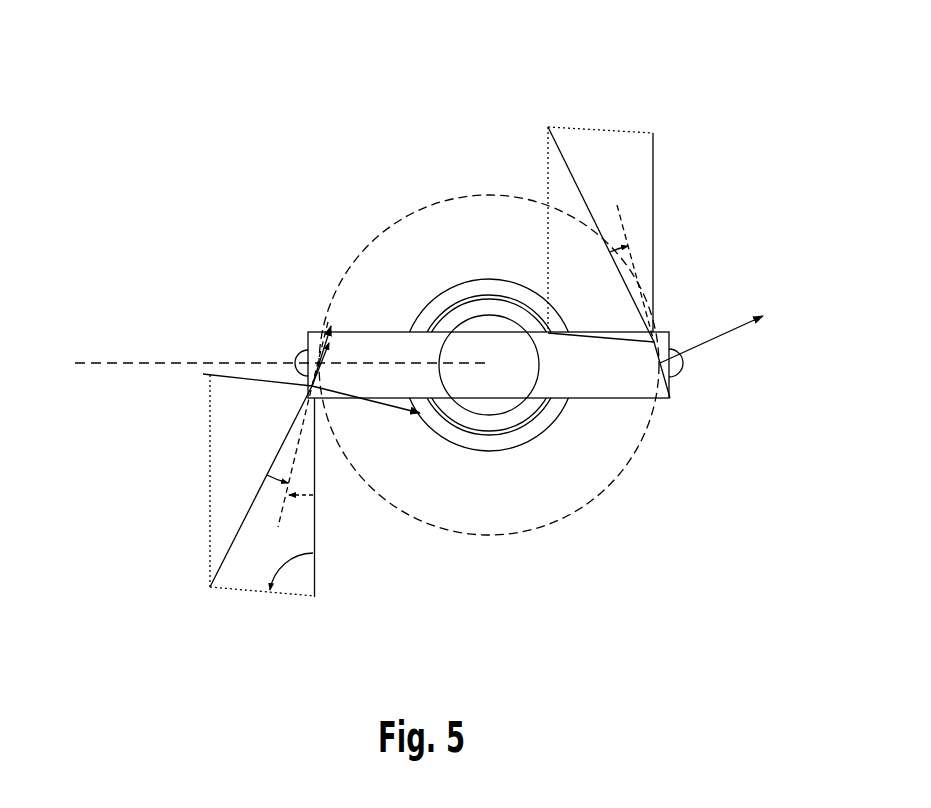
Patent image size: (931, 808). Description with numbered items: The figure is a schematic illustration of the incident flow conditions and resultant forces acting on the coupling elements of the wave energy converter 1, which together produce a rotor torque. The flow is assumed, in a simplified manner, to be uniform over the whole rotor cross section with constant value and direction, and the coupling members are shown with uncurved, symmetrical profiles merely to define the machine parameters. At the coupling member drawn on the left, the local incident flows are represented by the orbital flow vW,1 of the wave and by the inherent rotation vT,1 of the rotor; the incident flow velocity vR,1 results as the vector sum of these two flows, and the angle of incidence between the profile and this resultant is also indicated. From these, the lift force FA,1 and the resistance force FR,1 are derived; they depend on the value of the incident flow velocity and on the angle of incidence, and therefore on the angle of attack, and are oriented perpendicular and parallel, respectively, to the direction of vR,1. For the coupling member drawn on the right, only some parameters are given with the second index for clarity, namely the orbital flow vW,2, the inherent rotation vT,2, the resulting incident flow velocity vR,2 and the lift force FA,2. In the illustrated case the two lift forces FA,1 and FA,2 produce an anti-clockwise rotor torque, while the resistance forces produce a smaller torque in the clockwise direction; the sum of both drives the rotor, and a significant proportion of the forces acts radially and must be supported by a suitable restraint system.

The wave energy converter 1 is at (308, 110).
The resistance force FR,1 is at (313, 323).
The lift force FA,1 is at (345, 390).
The lift force FA,2 is at (712, 340).
The incident flow velocity vR,1 is at (245, 518).
The incident flow velocity vR,2 is at (570, 172).
The orbital flow vW,1 is at (263, 385).
The orbital flow vW,2 is at (575, 347).
The inherent rotation vT,1 is at (315, 582).
The inherent rotation vT,2 is at (653, 240).